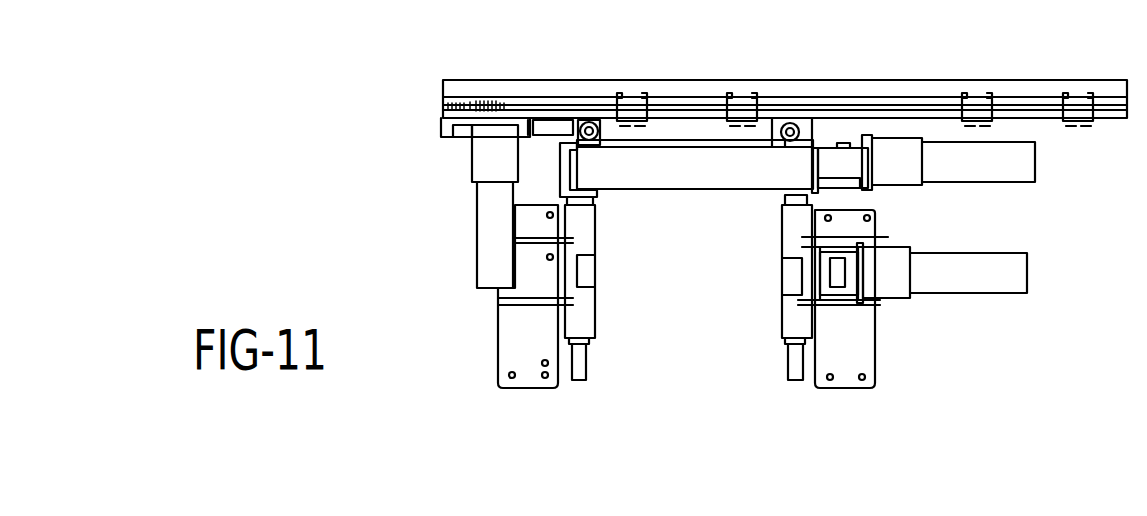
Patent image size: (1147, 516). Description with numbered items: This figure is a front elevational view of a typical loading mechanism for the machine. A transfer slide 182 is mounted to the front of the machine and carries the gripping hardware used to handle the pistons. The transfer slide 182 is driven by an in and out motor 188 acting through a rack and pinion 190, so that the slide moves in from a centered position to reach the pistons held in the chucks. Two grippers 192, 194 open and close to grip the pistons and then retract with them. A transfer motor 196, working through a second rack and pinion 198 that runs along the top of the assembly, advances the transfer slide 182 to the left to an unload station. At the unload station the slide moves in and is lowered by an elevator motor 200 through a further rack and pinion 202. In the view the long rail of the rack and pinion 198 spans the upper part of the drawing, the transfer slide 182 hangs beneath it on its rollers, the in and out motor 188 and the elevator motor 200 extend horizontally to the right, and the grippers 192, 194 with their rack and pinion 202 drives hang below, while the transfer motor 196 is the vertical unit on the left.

The transfer slide 182 is at (683, 120).
The in and out motor 188 is at (1005, 183).
The rack and pinion 190 is at (577, 143).
The gripper 192 is at (617, 120).
The gripper 194 is at (800, 118).
The transfer motor 196 is at (473, 237).
The rack and pinion 198 is at (570, 58).
The elevator motor 200 is at (963, 297).
The rack and pinion 202 is at (647, 252).